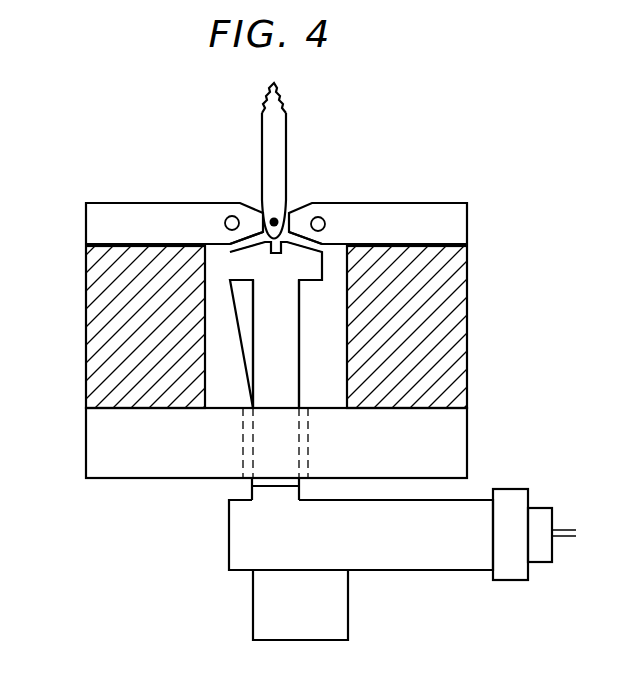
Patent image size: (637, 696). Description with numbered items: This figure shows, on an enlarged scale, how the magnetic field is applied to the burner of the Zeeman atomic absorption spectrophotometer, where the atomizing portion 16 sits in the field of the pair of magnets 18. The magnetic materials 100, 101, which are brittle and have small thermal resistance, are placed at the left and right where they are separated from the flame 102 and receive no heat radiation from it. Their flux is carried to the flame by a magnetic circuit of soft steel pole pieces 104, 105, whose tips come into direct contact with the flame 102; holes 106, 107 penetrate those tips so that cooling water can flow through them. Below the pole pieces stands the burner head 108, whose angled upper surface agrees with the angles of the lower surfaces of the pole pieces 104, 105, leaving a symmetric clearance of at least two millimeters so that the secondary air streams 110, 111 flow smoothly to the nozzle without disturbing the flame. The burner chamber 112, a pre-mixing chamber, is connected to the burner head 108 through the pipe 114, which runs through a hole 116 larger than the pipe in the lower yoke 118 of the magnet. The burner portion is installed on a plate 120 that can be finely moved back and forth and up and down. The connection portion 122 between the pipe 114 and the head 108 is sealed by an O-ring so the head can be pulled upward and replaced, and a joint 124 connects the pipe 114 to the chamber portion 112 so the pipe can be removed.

The atomizing portion 16 is at (262, 137).
The pair of magnets 18 is at (488, 258).
The magnetic material 100 is at (86, 318).
The magnetic material 101 is at (467, 302).
The flame 102 is at (286, 113).
The pole piece 104 is at (137, 203).
The pole piece 105 is at (410, 203).
The hole 106 is at (231, 216).
The hole 107 is at (320, 217).
The burner head 108 is at (300, 292).
The secondary air stream 110 is at (240, 241).
The secondary air stream 111 is at (312, 241).
The burner chamber 112 is at (407, 570).
The pipe 114 is at (300, 353).
The hole 116 is at (308, 440).
The lower yoke 118 is at (467, 448).
The plate 120 is at (253, 602).
The connection portion 122 is at (253, 312).
The joint 124 is at (250, 484).